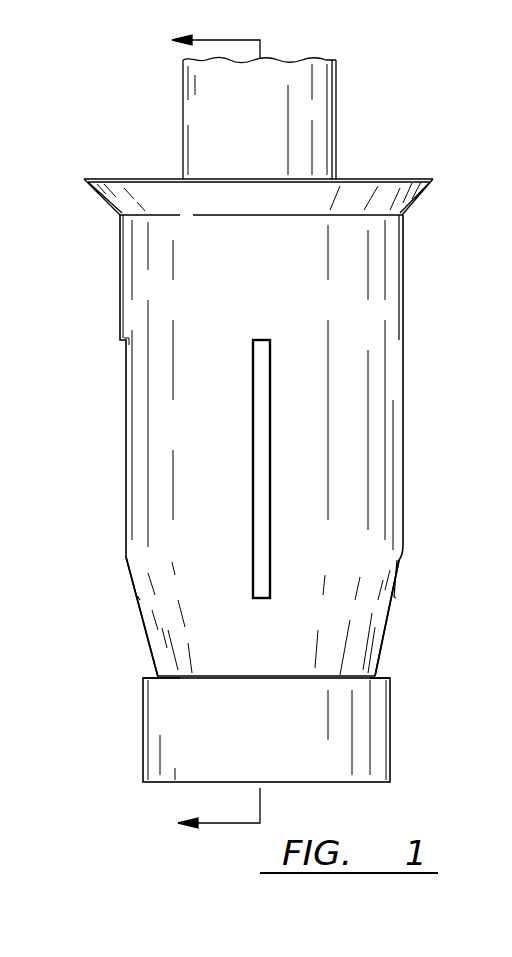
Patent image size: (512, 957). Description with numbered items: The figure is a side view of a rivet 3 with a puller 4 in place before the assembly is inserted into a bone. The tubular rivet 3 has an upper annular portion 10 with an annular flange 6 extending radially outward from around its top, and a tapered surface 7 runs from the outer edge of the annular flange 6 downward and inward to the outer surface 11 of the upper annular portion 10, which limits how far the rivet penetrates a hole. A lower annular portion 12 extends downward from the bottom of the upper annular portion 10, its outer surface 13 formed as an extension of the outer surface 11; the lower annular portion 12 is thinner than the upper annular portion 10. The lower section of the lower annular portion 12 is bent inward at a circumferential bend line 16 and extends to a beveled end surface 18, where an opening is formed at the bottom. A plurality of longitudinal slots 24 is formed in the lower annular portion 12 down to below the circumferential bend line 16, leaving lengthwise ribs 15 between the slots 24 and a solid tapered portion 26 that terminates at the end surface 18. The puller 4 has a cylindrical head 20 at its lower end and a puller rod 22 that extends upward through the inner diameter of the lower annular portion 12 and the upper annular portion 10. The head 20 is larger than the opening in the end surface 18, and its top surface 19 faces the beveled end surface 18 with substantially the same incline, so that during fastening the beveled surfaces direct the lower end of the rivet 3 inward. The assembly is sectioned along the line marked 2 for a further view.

The section line 2- 2 is at (206, 436).
The rivet 3 is at (414, 303).
The puller 4 is at (180, 90).
The annular flange 6 is at (383, 178).
The tapered surface 7 is at (416, 203).
The upper annular portion 10 is at (118, 287).
The outer surface 11 is at (355, 257).
The lower annular portion 12 is at (152, 385).
The outer surface 13 is at (388, 630).
The lengthwise ribs 15 is at (375, 395).
The circumferential bend line 16 is at (126, 556).
The end surface 18 is at (177, 678).
The top surface 19 is at (380, 677).
The head 20 is at (342, 747).
The puller rod 22 is at (298, 115).
The longitudinal slots 24 is at (255, 433).
The solid tapered portion 26 is at (197, 642).